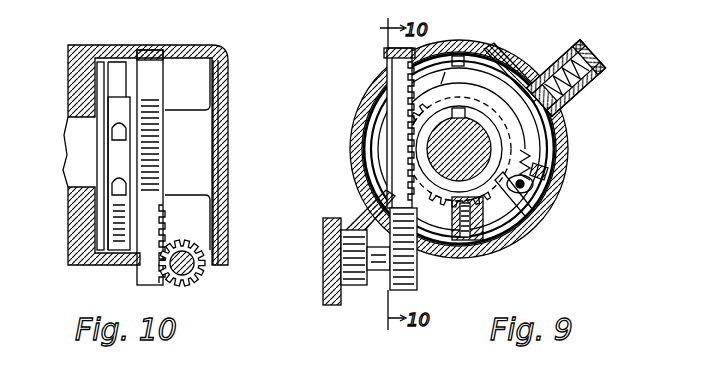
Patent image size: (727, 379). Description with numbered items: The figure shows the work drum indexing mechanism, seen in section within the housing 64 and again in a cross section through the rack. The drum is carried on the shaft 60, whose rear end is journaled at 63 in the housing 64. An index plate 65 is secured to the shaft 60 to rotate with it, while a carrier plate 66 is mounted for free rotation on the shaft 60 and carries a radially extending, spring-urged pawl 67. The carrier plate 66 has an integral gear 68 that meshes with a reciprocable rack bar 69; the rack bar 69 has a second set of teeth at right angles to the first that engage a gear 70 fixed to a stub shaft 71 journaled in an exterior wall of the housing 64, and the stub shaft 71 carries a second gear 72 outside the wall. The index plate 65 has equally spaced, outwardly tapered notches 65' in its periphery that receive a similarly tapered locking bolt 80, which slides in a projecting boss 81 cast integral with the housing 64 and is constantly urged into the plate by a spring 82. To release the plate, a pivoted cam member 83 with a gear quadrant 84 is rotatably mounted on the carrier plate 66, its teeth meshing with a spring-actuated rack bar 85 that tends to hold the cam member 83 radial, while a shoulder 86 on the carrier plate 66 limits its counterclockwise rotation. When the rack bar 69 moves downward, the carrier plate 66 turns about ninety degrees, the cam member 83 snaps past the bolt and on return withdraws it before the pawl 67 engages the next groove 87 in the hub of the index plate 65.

In FIG. 10, the shaft 60 is at (123, 85).
In FIG. 9, the shaft 60 is at (563, 152).
In FIG. 10, the journal 63 is at (193, 125).
In FIG. 10, the housing 64 is at (215, 46).
In FIG. 9, the housing 64 is at (356, 124).
In FIG. 10, the index plate 65 is at (67, 156).
In FIG. 9, the index plate 65 is at (451, 51).
In FIG. 9, the notches 65' is at (456, 112).
In FIG. 9, the carrier plate 66 is at (485, 90).
In FIG. 9, the pawl 67 is at (490, 256).
In FIG. 9, the gear 68 is at (500, 62).
In FIG. 10, the rack bar 69 is at (151, 167).
In FIG. 9, the rack bar 69 is at (396, 70).
In FIG. 10, the gear 70 is at (182, 263).
In FIG. 9, the gear 70 is at (417, 282).
In FIG. 9, the stub shaft 71 is at (374, 288).
In FIG. 9, the second gear 72 is at (345, 292).
In FIG. 9, the locking bolt 80 is at (566, 54).
In FIG. 9, the boss 81 is at (590, 100).
In FIG. 9, the spring 82 is at (598, 70).
In FIG. 9, the cam member 83 is at (520, 214).
In FIG. 9, the gear quadrant 84 is at (537, 188).
In FIG. 9, the rack bar 85 is at (485, 235).
In FIG. 9, the shoulder 86 is at (536, 206).
In FIG. 10, the groove 87 is at (118, 132).
In FIG. 9, the groove 87 is at (548, 172).